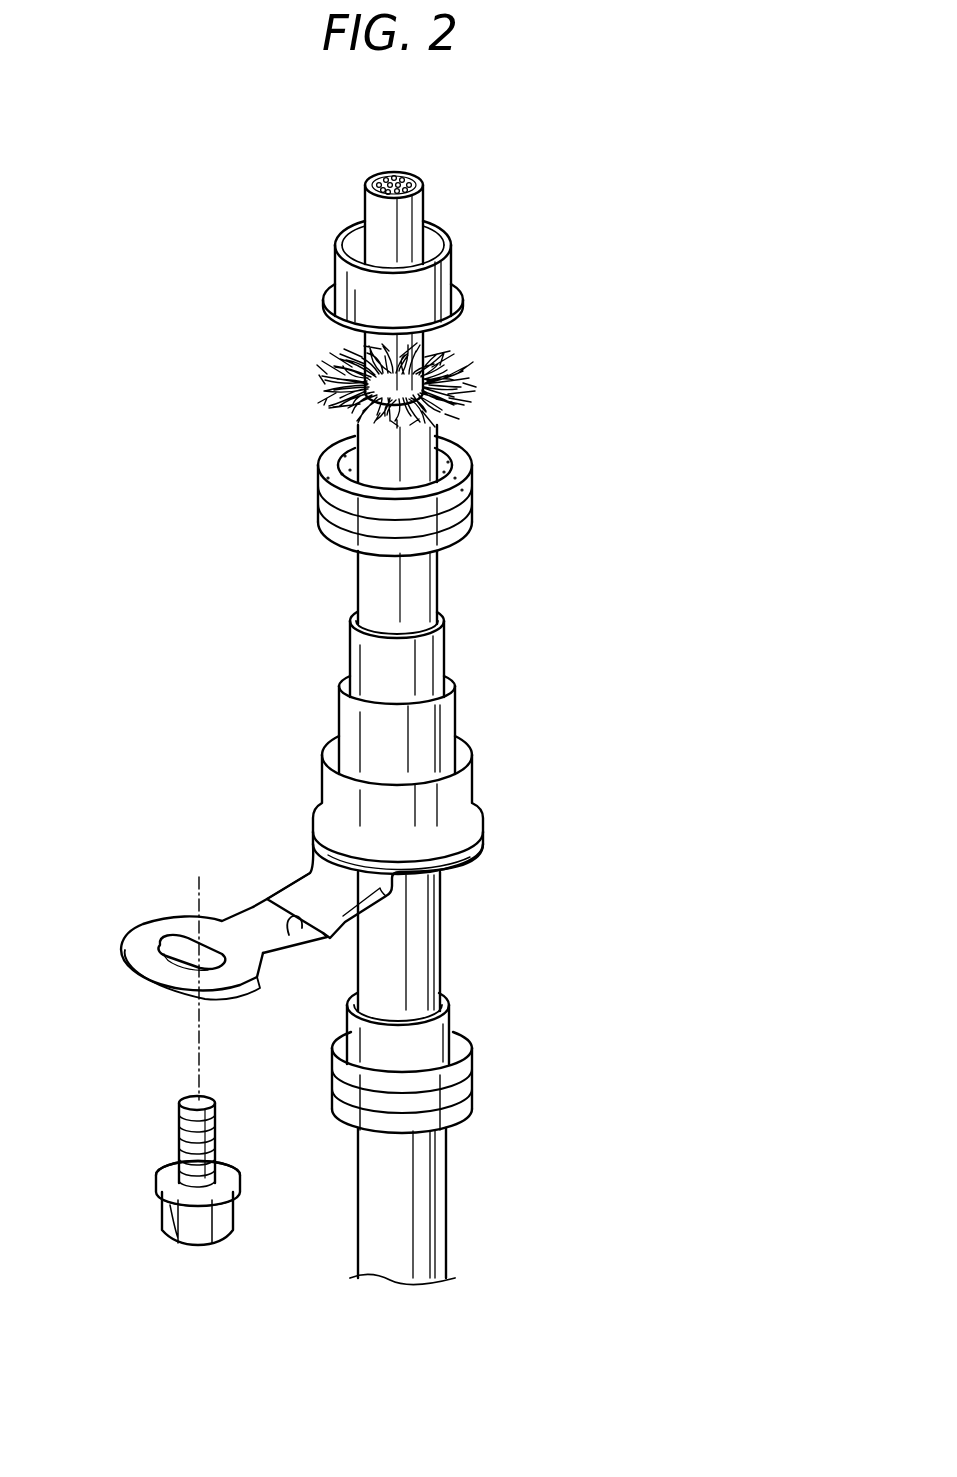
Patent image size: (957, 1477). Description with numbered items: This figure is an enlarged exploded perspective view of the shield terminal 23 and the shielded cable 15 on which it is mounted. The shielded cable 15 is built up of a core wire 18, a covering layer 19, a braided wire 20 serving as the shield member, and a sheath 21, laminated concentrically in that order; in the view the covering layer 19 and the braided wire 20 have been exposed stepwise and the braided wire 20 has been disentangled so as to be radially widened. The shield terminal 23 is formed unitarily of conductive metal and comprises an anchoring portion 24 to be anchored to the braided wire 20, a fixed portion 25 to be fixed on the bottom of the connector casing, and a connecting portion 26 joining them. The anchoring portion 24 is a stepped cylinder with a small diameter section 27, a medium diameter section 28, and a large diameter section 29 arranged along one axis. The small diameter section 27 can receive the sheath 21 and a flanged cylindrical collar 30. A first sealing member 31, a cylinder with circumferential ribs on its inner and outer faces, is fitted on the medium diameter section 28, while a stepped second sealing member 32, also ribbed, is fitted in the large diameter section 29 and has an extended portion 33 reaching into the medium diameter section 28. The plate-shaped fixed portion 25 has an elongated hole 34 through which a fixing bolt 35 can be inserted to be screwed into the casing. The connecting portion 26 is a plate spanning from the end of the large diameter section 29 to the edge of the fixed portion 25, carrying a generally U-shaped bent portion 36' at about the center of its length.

The shielded cable 15 is at (434, 1196).
The core wire 18 is at (400, 171).
The covering layer 19 is at (378, 220).
The braided wire 20 is at (472, 378).
The sheath 21 is at (424, 933).
The shield terminal 23 is at (282, 882).
The anchoring portion 24 is at (467, 722).
The fixed portion 25 is at (153, 947).
The connecting portion 26 is at (276, 886).
The small diameter section 27 is at (410, 658).
The medium diameter section 28 is at (442, 730).
The large diameter section 29 is at (436, 784).
The collar 30 is at (450, 268).
The first sealing member 31 is at (475, 506).
The second sealing member 32 is at (470, 1082).
The extended portion 33 is at (450, 1018).
The elongated hole 34 is at (165, 960).
The fixing bolt 35 is at (170, 1215).
The projection 36' is at (304, 968).